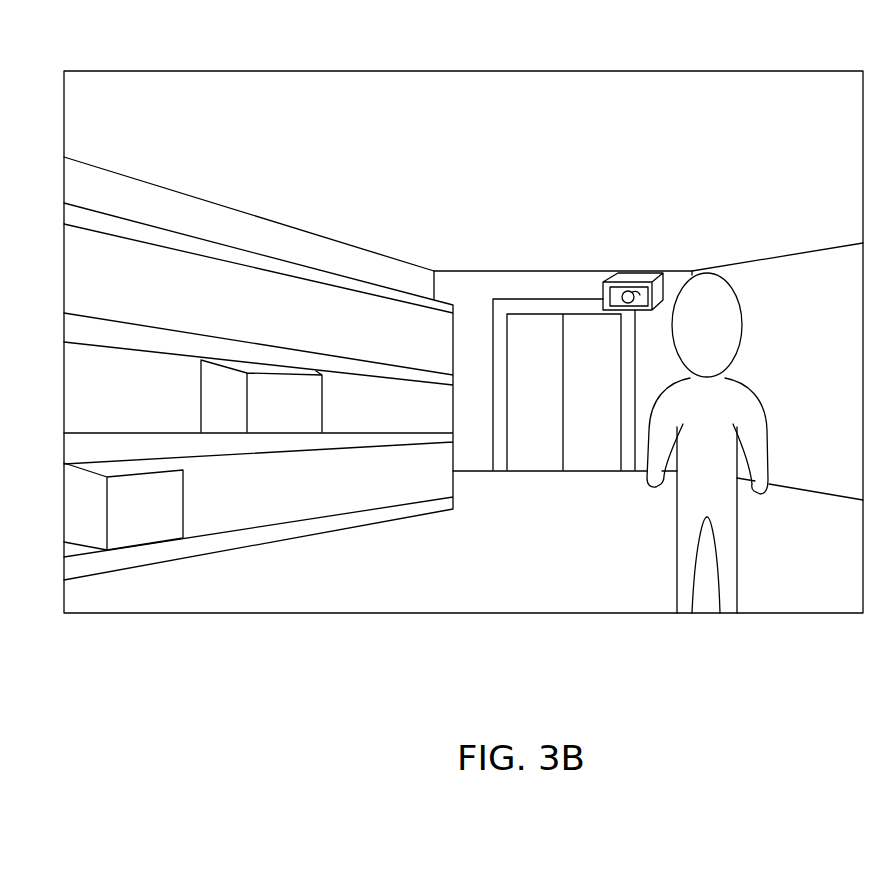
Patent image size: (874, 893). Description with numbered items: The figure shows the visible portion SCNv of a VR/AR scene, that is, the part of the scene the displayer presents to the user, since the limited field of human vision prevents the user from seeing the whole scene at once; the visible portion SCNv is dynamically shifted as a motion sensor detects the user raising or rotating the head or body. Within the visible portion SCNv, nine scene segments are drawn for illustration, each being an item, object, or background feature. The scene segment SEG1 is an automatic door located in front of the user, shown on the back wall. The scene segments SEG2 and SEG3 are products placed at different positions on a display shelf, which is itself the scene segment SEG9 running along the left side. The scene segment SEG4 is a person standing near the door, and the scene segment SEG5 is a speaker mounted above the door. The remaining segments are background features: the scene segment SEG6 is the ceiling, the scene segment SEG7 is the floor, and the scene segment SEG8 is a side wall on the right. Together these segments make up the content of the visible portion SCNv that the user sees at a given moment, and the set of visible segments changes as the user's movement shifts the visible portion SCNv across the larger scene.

The visible portion SCNv is at (735, 71).
The scene segment (automatic door) SEG1 is at (592, 395).
The scene segment (product) SEG2 is at (174, 520).
The scene segment (product) SEG3 is at (312, 411).
The scene segment (person) SEG4 is at (735, 416).
The scene segment (speaker) SEG5 is at (604, 274).
The scene segment (ceiling) SEG6 is at (420, 154).
The scene segment (floor) SEG7 is at (583, 590).
The scene segment (side wall) SEG8 is at (835, 340).
The scene segment (display shelf) SEG9 is at (251, 308).